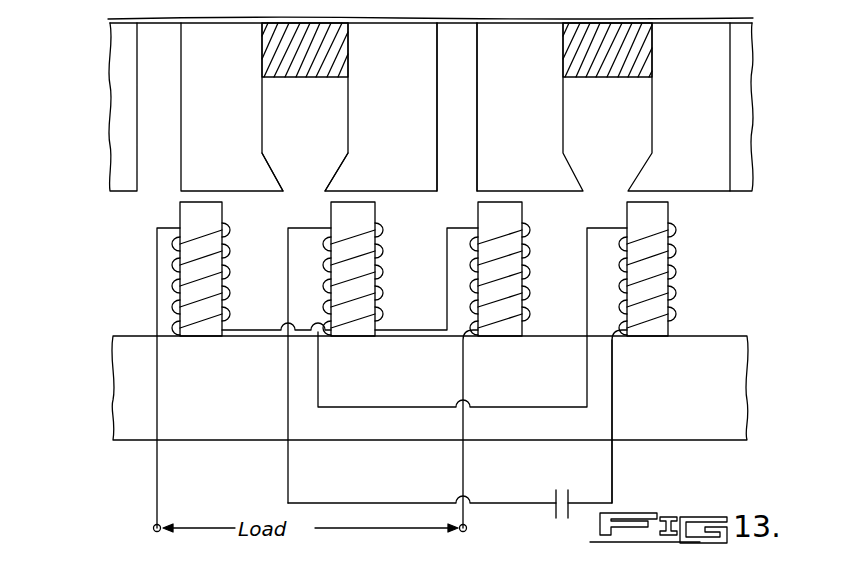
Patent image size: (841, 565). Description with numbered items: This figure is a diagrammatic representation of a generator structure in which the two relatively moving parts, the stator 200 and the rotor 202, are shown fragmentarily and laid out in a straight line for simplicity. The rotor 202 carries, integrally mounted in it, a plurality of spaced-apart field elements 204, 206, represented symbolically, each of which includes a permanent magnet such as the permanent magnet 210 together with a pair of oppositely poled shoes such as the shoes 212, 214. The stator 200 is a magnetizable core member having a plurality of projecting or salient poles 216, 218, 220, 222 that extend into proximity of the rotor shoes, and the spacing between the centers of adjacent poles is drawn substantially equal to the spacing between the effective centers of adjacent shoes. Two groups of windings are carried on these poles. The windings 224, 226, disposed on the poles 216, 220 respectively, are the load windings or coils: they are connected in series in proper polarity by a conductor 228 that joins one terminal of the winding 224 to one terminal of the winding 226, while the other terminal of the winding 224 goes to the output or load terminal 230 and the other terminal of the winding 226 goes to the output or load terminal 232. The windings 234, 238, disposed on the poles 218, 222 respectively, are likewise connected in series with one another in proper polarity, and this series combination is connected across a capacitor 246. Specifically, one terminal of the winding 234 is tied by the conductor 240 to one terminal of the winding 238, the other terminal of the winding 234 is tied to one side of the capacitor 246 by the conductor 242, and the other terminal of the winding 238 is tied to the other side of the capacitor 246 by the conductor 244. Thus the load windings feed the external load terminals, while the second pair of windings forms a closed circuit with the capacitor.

The stator 200 is at (110, 393).
The rotor 202 is at (157, 72).
The field element 204 is at (412, 19).
The field element 206 is at (718, 21).
The permanent magnet 210 is at (300, 70).
The shoe 212 is at (247, 190).
The shoe 214 is at (415, 190).
The pole 216 is at (195, 210).
The pole 218 is at (365, 213).
The pole 220 is at (513, 215).
The pole 222 is at (657, 214).
The winding 224 is at (257, 243).
The winding 226 is at (555, 243).
The conductor 228 is at (250, 330).
The output or load terminal 230 is at (162, 527).
The output or load terminal 232 is at (467, 531).
The winding 234 is at (410, 262).
The winding 238 is at (675, 252).
The conductor 240 is at (423, 392).
The conductor 242 is at (392, 487).
The conductor 244 is at (612, 478).
The capacitor 246 is at (580, 478).